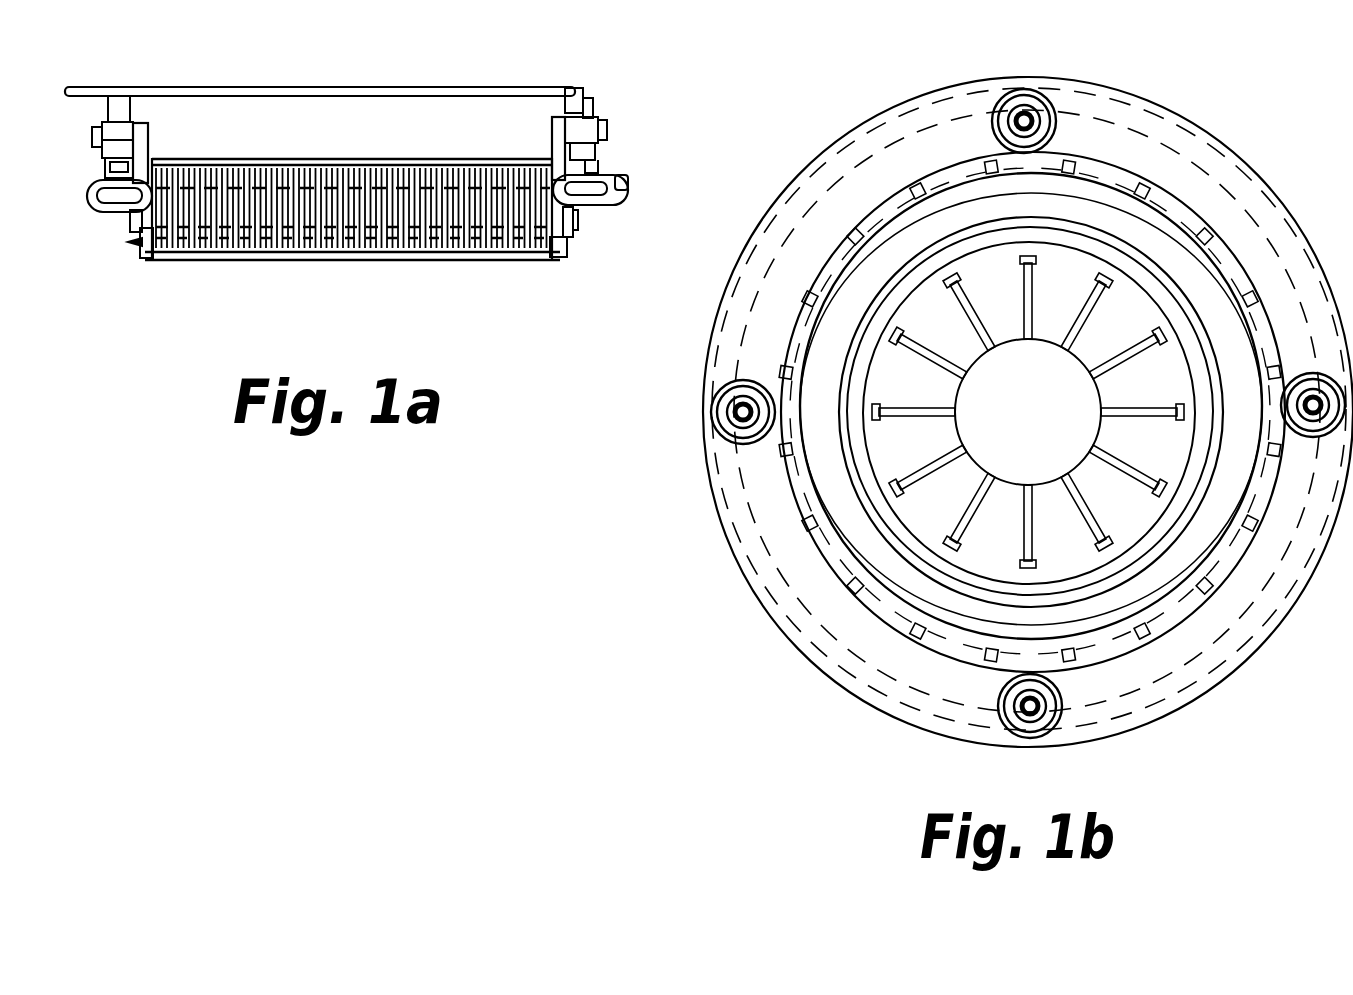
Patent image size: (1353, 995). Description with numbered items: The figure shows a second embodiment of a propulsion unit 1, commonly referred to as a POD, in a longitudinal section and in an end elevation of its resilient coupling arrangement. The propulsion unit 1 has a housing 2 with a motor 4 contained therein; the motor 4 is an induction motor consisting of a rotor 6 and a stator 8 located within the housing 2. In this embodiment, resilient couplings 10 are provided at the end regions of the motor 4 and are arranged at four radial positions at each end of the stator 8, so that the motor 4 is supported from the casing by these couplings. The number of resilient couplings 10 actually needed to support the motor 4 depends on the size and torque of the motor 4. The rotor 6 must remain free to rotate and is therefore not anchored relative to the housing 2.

In FIG. 1B, the propulsion unit 1 is at (680, 488).
In FIG. 1A, the housing 2 is at (485, 90).
In FIG. 1B, the housing 2 is at (967, 82).
In FIG. 1B, the motor 4 is at (1205, 207).
In FIG. 1A, the rotor 6 is at (460, 232).
In FIG. 1B, the rotor 6 is at (872, 493).
In FIG. 1A, the stator 8 is at (490, 195).
In FIG. 1B, the stator 8 is at (930, 217).
In FIG. 1B, the resilient couplings 10 is at (990, 691).